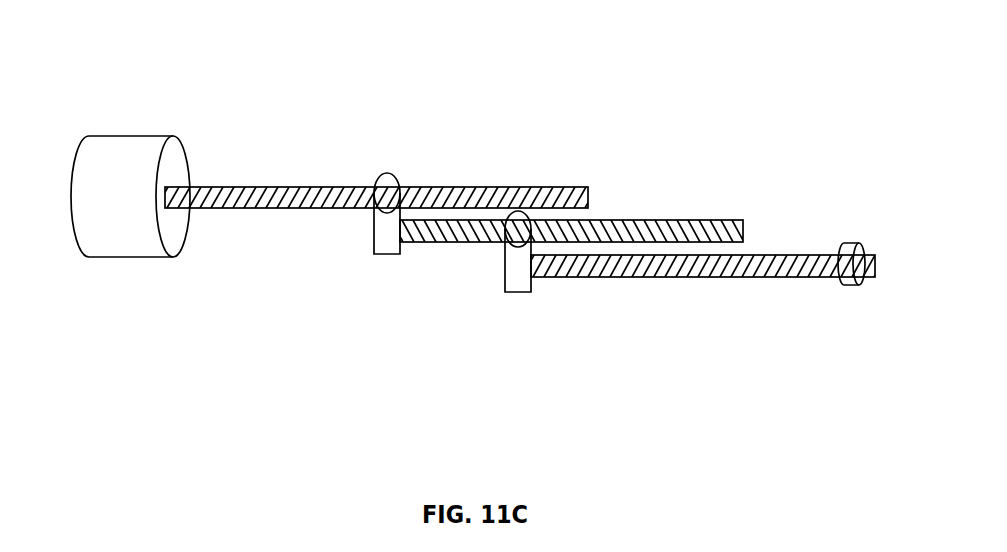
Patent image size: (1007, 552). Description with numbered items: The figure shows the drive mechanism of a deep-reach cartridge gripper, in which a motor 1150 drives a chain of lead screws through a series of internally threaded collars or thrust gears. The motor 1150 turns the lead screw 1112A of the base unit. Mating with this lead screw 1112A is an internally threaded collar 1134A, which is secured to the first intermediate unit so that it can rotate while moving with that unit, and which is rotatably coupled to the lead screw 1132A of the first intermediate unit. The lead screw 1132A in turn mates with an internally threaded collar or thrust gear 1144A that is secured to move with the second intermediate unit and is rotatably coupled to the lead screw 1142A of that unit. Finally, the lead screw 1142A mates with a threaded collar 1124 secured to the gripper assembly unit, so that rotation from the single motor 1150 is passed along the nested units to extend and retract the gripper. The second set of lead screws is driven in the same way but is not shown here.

The motor 1150 is at (105, 157).
The lead screw 1112A is at (267, 186).
The internally threaded collar 1134A is at (374, 214).
The lead screw 1132A is at (637, 220).
The internally threaded collar or thrust gear 1144A is at (505, 252).
The lead screw 1142A is at (683, 278).
The threaded collar 1124 is at (850, 242).